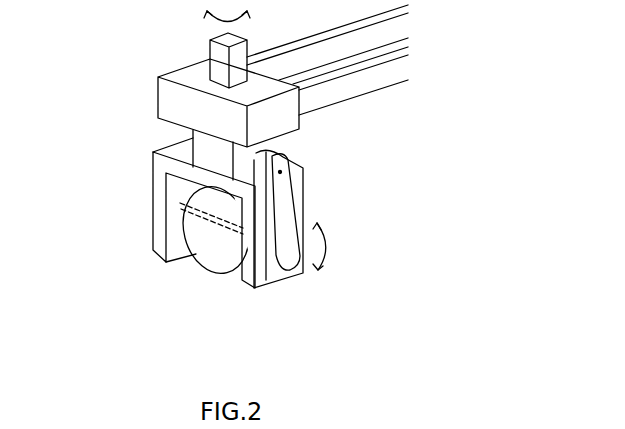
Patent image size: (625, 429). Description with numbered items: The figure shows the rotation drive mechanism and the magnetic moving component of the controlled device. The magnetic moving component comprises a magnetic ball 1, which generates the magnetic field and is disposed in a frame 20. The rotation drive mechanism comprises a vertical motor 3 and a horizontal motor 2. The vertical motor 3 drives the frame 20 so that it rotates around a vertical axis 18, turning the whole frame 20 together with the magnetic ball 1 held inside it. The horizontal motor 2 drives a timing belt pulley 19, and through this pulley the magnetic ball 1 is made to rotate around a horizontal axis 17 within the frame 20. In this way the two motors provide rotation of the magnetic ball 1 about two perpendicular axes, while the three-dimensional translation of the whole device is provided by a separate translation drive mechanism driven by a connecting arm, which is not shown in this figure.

The magnetic ball 1 is at (218, 244).
The horizontal motor 2 is at (250, 164).
The vertical motor 3 is at (224, 60).
The horizontal axis 17 is at (220, 222).
The vertical axis 18 is at (204, 147).
The timing belt pulley 19 is at (283, 180).
The frame 20 is at (272, 277).